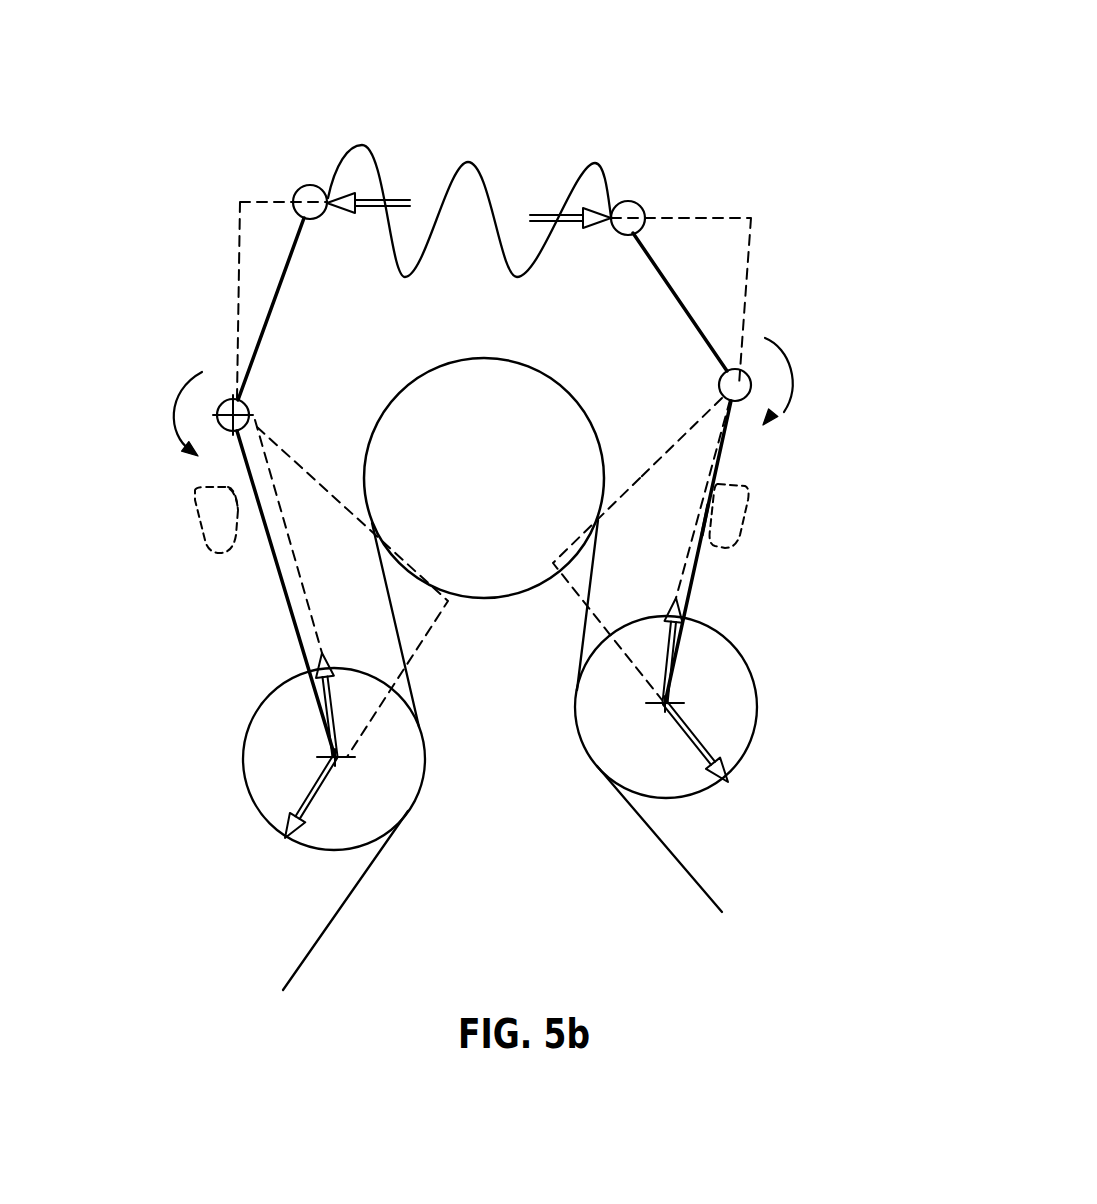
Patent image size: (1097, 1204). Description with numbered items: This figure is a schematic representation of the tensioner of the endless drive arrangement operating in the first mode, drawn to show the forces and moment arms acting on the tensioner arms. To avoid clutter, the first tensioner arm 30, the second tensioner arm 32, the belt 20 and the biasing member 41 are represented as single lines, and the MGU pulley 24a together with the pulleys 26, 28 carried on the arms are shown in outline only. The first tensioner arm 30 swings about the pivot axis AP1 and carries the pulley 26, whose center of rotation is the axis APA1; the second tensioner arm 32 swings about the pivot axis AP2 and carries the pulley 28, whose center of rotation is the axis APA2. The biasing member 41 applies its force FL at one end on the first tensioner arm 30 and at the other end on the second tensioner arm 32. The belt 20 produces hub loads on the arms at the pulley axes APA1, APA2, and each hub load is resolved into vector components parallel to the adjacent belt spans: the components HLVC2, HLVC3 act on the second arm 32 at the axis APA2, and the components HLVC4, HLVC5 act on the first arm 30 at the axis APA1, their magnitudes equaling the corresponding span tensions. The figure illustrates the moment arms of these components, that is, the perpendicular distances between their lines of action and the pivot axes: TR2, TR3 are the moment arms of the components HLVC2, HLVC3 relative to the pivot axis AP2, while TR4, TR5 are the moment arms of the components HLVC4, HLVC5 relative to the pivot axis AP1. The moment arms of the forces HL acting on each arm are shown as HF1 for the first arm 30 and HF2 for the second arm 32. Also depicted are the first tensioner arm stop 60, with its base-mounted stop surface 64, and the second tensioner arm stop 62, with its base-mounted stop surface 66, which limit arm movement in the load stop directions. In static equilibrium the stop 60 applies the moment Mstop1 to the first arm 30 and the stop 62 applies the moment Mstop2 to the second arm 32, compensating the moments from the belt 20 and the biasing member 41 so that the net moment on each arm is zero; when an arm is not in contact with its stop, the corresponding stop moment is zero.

The belt 20 is at (343, 955).
The MGU pulley 24a is at (530, 398).
The pulley 26 is at (272, 800).
The pulley 28 is at (613, 768).
The first tensioner arm 30 is at (261, 343).
The second tensioner arm 32 is at (722, 462).
The biasing member 41 is at (486, 190).
The first tensioner arm stop 60 is at (208, 517).
The second tensioner arm stop 62 is at (725, 522).
The first base-mounted stop surface 64 is at (236, 503).
The second base-mounted stop surface 66 is at (703, 517).
The biasing member force FL is at (402, 203).
The hub load moment arm HF1 is at (243, 256).
The hub load moment arm HF2 is at (753, 286).
The first pivot axis AP1 is at (222, 435).
The second pivot axis AP2 is at (741, 368).
The moment arm TR2 is at (638, 483).
The moment arm TR3 is at (700, 450).
The moment arm TR4 is at (253, 397).
The moment arm TR5 is at (320, 487).
The first stop moment Mstop1 is at (177, 395).
The second stop moment Mstop2 is at (790, 383).
The pulley axis APA1 is at (333, 760).
The pulley axis APA2 is at (667, 698).
The hub load vector component HLVC2 is at (697, 758).
The hub load vector component HLVC3 is at (662, 630).
The hub load vector component HLVC4 is at (327, 697).
The hub load vector component HLVC5 is at (313, 803).